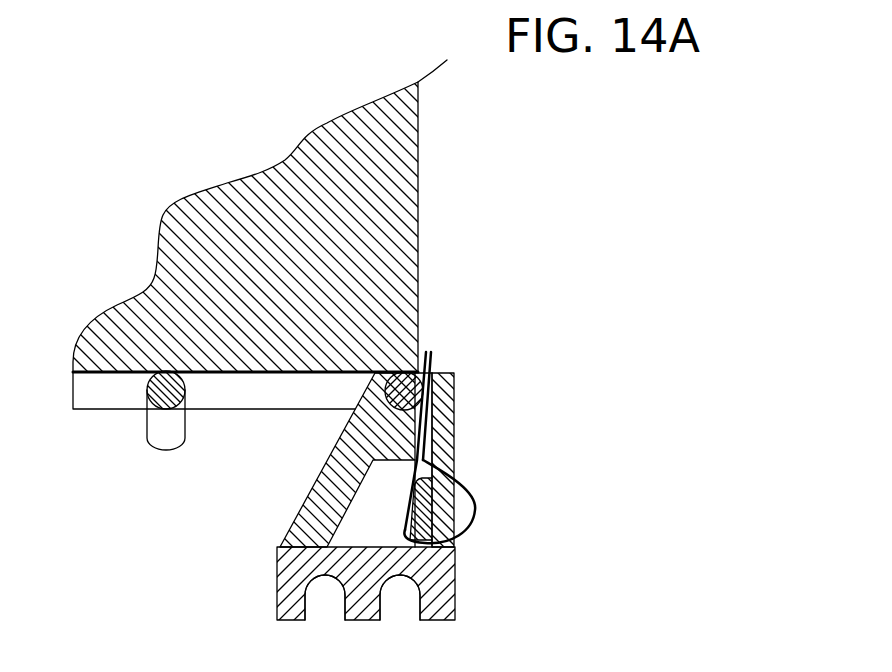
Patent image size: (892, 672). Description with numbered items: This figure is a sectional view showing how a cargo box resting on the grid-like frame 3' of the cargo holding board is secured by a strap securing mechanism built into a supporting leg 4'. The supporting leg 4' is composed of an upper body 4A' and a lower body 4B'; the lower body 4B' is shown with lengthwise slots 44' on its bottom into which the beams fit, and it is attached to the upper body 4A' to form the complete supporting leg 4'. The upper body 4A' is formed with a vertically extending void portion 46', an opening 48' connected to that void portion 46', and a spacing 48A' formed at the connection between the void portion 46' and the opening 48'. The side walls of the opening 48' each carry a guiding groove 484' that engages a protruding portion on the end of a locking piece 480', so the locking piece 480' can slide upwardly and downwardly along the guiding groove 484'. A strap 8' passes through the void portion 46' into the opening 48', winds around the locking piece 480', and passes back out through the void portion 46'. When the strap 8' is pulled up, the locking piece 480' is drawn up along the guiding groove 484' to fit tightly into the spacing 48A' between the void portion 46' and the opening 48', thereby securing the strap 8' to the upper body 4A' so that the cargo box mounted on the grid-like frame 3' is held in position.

The grid-like frame 3' is at (214, 444).
The supporting leg 4' is at (365, 490).
The upper body 4A' is at (342, 459).
The lower body 4B' is at (360, 605).
The lengthwise slots 44' is at (362, 619).
The void portion 46' is at (443, 431).
The opening 48' is at (441, 485).
The spacing 48A' is at (500, 460).
The guiding groove 484' is at (453, 501).
The locking piece 480' is at (500, 501).
The strap 8' is at (500, 451).